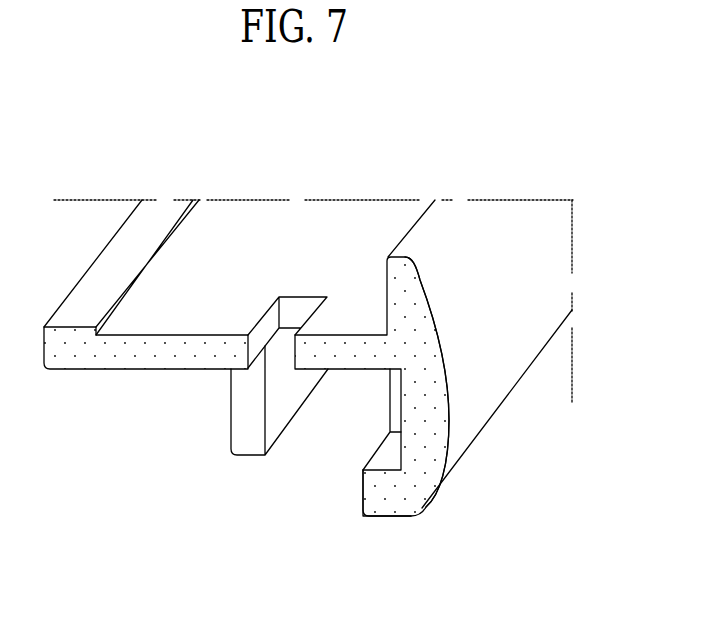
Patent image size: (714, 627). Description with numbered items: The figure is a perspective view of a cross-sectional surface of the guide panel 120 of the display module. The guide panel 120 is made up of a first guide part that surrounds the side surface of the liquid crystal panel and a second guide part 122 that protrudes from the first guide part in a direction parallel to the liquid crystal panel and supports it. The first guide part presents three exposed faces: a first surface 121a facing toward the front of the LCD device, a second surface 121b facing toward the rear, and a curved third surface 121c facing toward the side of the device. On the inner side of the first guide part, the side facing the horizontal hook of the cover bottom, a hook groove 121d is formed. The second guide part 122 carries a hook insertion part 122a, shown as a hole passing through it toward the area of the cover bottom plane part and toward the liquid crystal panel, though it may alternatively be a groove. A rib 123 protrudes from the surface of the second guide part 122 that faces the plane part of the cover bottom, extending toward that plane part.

The guide panel 120 is at (312, 112).
The first surface 121a is at (408, 253).
The second surface 121b is at (388, 518).
The third surface 121c is at (547, 262).
The hook groove 121d is at (373, 411).
The second guide part 122 is at (237, 222).
The hook insertion part 122a is at (296, 308).
The rib 123 is at (242, 420).